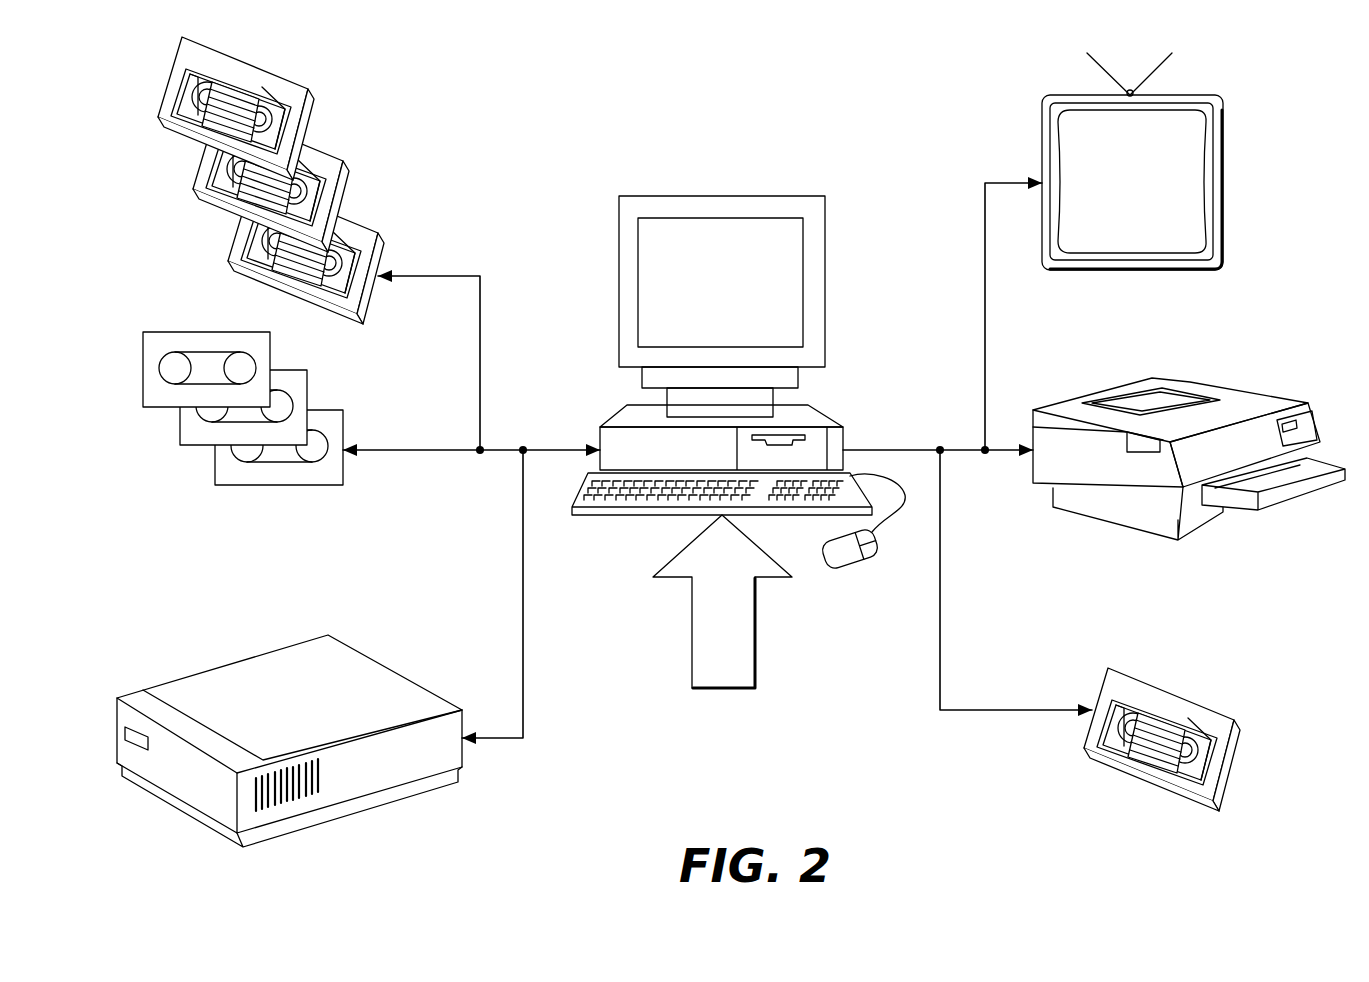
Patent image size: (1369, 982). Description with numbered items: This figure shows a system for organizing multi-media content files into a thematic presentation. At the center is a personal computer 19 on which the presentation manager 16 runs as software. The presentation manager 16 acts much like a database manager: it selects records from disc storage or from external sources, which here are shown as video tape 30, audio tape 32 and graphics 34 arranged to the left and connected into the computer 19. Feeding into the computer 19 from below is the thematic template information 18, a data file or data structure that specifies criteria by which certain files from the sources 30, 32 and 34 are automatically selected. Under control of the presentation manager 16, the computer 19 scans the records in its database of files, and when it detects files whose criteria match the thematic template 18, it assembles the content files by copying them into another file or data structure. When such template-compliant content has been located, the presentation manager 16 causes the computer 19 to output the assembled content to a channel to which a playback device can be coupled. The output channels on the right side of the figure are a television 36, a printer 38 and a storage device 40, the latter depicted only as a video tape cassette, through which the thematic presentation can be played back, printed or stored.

The presentation manager 16 is at (738, 383).
The personal computer 19 is at (610, 420).
The thematic template information 18 is at (692, 634).
The video tape 30 is at (172, 78).
The audio tape 32 is at (281, 486).
The graphics 34 is at (222, 670).
The television 36 is at (1224, 185).
The printer 38 is at (1320, 420).
The storage device 40 is at (1232, 774).